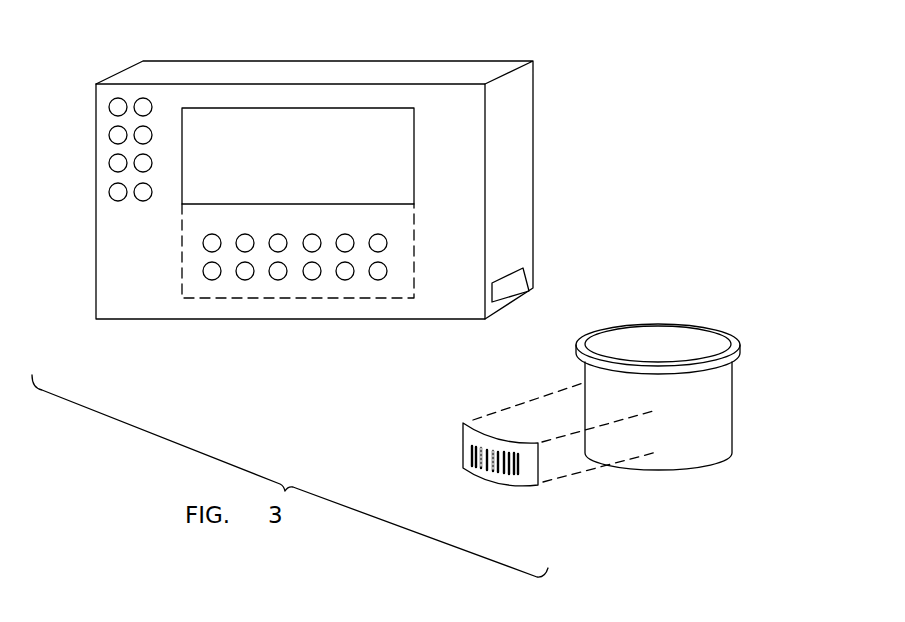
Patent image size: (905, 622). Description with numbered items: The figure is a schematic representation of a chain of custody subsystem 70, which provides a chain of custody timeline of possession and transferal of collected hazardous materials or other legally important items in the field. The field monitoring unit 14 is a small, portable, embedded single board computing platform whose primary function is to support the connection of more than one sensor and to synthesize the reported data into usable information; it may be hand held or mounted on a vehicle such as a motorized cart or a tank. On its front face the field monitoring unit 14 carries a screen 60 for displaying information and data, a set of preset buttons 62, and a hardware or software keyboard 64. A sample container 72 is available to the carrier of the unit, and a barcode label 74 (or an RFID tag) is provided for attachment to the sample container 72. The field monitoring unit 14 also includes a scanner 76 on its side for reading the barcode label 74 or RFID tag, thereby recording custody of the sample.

The field monitoring unit 14 is at (319, 188).
The screen 60 is at (386, 140).
The preset buttons 62 is at (143, 136).
The keyboard 64 is at (230, 281).
The chain of custody subsystem 70 is at (621, 276).
The sample container 72 is at (708, 424).
The barcode label 74 is at (527, 478).
The scanner 76 is at (505, 285).